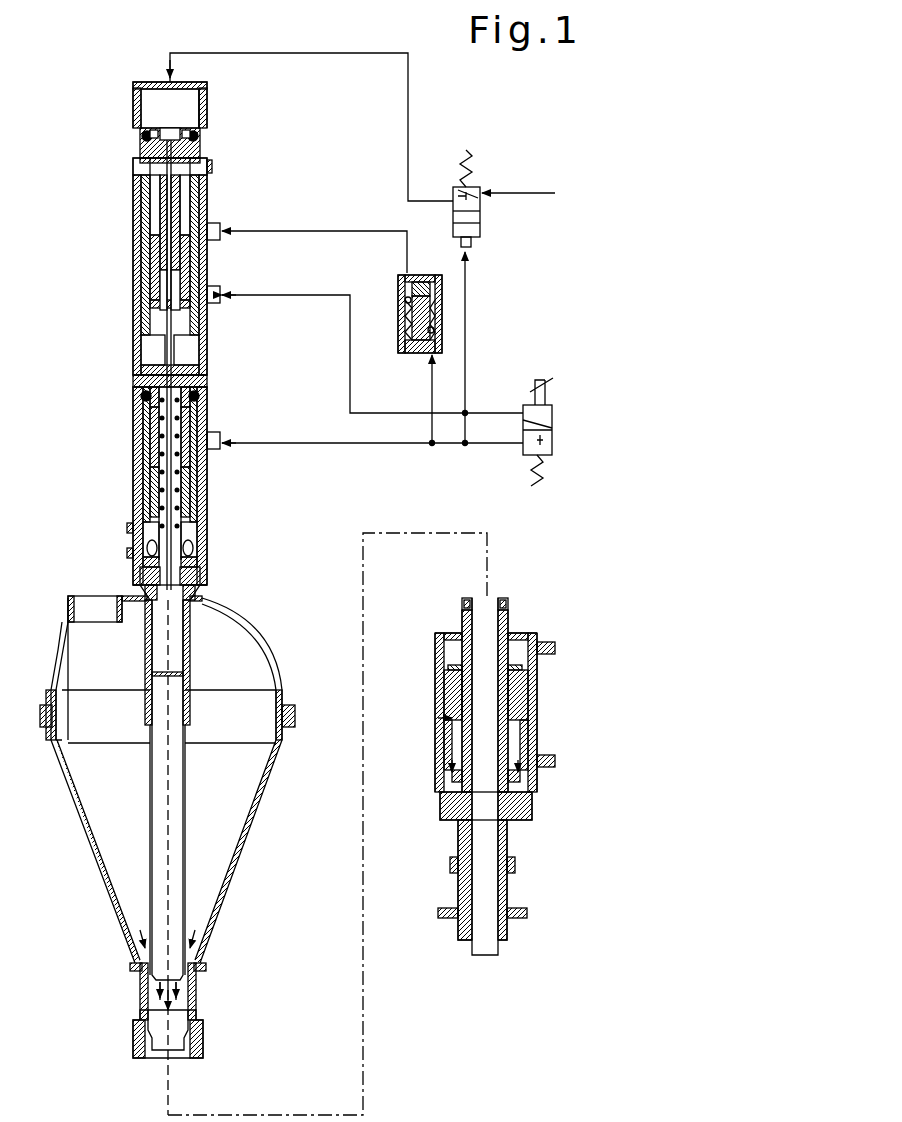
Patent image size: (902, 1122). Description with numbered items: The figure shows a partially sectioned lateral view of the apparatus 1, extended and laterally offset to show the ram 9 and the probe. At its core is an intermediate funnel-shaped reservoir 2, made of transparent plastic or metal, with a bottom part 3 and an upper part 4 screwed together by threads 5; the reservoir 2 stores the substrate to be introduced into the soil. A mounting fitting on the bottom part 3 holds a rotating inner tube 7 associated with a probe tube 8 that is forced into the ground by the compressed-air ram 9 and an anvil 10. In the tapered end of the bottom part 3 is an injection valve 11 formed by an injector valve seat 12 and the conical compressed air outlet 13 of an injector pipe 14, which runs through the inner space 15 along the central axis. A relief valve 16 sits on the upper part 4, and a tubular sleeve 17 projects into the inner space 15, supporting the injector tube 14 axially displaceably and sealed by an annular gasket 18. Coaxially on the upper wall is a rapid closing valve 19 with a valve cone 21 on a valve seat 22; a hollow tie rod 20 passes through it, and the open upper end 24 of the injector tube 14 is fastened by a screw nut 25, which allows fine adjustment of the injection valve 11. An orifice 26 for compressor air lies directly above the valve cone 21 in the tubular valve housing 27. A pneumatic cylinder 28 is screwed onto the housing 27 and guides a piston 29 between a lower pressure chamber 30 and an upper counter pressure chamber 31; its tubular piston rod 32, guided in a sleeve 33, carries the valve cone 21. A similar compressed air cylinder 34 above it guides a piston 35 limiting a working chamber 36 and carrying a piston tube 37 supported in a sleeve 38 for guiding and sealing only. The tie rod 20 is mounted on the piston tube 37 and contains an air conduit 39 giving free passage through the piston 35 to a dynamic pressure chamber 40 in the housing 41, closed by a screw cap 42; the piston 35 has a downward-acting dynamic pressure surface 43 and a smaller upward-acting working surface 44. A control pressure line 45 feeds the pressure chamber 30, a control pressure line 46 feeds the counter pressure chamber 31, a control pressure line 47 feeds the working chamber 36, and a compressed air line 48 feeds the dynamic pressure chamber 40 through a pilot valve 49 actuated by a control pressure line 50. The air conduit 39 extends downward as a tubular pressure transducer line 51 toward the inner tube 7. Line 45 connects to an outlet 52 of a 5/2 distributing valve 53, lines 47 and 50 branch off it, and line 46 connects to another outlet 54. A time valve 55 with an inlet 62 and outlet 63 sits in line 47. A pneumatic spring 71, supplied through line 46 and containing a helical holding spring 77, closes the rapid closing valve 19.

The apparatus 1 is at (60, 202).
The intermediate funnel-shaped reservoir 2 is at (272, 776).
The bottom part 3 is at (238, 840).
The upper part 4 is at (278, 655).
The threads 5 is at (290, 708).
The inner tube 7 is at (500, 598).
The probe tube 8 is at (468, 942).
The ram 9 is at (440, 690).
The anvil 10 is at (440, 806).
The injection valve 11 is at (200, 978).
The injector valve seat 12 is at (145, 972).
The compressed air outlet 13 is at (158, 985).
The injector pipe 14 is at (148, 805).
The inner space 15 is at (228, 794).
The relief valve 16 is at (78, 606).
The tubular sleeve 17 is at (192, 712).
The annular gasket 18 is at (160, 680).
The rapid closing valve 19 is at (222, 569).
The tie rod 20 is at (192, 512).
The valve cone 21 is at (148, 565).
The valve seat 22 is at (190, 585).
The open upper end 24 is at (152, 615).
The screw nut 25 is at (140, 582).
The orifice 26 is at (188, 548).
The tubular valve housing 27 is at (135, 518).
The pneumatic cylinder 28 is at (210, 386).
The piston 29 is at (145, 398).
The pressure chamber 30 is at (196, 404).
The counter pressure chamber 31 is at (190, 368).
The piston rod 32 is at (150, 497).
The sleeve 33 is at (150, 440).
The compressed air cylinder 34 is at (210, 170).
The piston 35 is at (148, 147).
The working chamber 36 is at (148, 180).
The piston tube 37 is at (145, 240).
The sleeve 38 is at (138, 225).
The air conduit 39 is at (162, 365).
The dynamic pressure chamber 40 is at (185, 100).
The housing 41 is at (208, 118).
The screw cap 42 is at (135, 82).
The dynamic pressure surface 43 is at (200, 137).
The working surface 44 is at (135, 168).
The control pressure line 45 is at (390, 444).
The control pressure line 46 is at (340, 372).
The control pressure line 47 is at (288, 222).
The compressed air line 48 is at (333, 55).
The pilot valve 49 is at (482, 230).
The control pressure line 50 is at (467, 292).
The pressure transducer line 51 is at (166, 860).
The outlet 52 is at (523, 448).
The 5/2 distributing valve 53 is at (556, 410).
The outlet 54 is at (523, 410).
The time valve 55 is at (410, 355).
The inlet 62 is at (438, 356).
The outlet 63 is at (412, 272).
The pneumatic spring 71 is at (180, 482).
The helical holding spring 77 is at (150, 465).